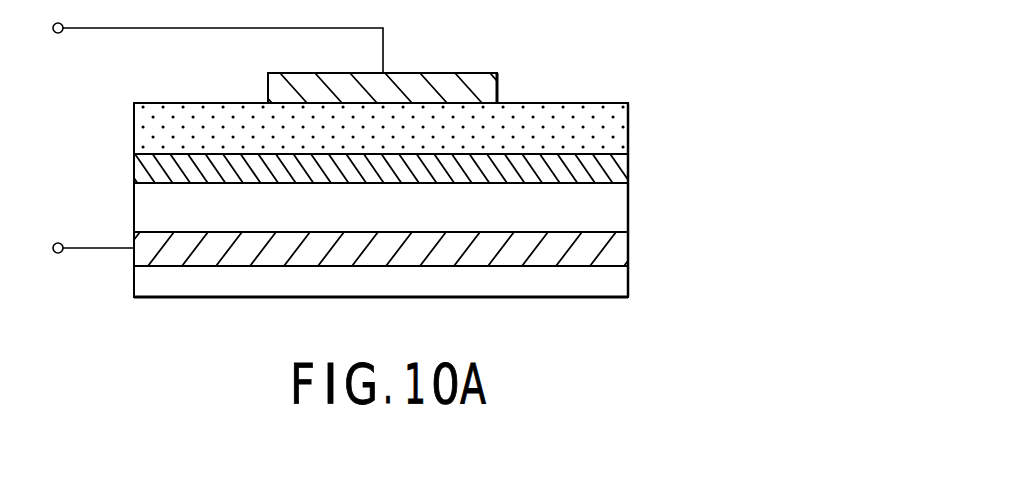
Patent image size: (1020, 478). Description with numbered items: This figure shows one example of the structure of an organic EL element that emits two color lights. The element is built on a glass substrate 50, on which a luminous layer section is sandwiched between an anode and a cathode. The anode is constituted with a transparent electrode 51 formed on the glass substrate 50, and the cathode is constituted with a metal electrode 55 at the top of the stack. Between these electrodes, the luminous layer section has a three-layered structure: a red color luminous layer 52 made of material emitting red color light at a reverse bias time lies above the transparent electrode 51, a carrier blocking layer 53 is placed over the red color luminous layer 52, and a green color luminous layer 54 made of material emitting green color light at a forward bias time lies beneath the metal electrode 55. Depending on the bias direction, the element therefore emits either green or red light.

The glass substrate 50 is at (643, 285).
The transparent electrode 51 is at (643, 250).
The red color luminous layer 52 is at (643, 212).
The carrier blocking layer 53 is at (643, 173).
The green color luminous layer 54 is at (643, 134).
The metal electrode 55 is at (511, 92).